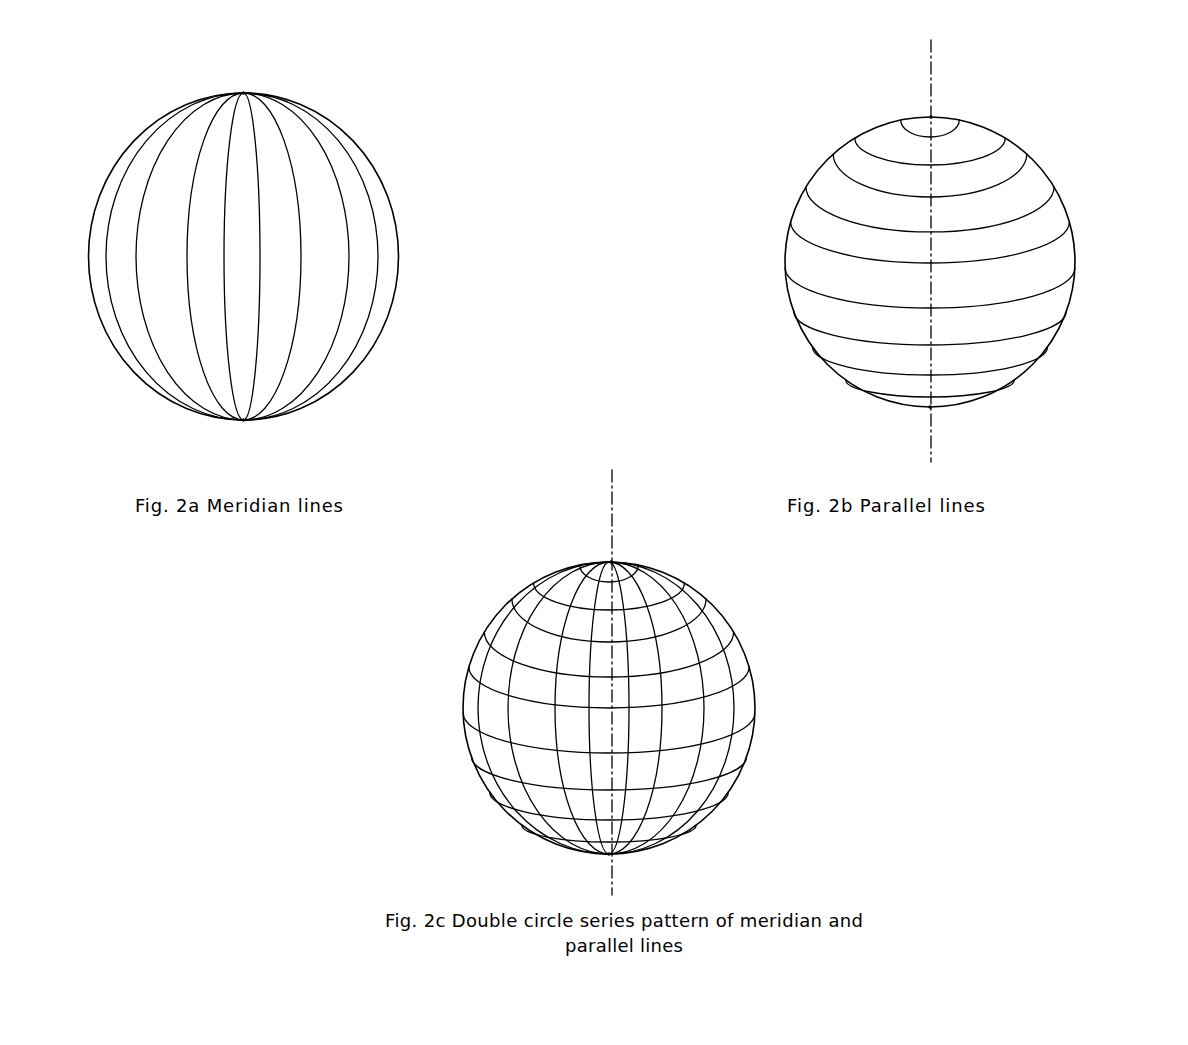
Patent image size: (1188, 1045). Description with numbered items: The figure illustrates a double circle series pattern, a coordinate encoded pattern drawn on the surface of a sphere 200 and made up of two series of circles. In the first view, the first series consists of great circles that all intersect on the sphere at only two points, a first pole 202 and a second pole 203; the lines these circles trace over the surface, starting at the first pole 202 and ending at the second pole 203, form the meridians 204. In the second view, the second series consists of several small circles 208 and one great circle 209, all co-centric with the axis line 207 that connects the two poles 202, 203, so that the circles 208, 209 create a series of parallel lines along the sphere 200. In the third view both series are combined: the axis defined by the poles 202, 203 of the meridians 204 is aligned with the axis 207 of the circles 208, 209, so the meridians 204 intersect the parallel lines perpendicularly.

In FIG. 2A, the sphere 200 is at (418, 291).
In FIG. 2B, the sphere 200 is at (762, 169).
In FIG. 2C, the sphere 200 is at (420, 757).
In FIG. 2A, the first pole 202 is at (244, 93).
In FIG. 2B, the first pole 202 is at (931, 116).
In FIG. 2C, the first pole 202 is at (611, 560).
In FIG. 2A, the second pole 203 is at (244, 420).
In FIG. 2B, the second pole 203 is at (928, 408).
In FIG. 2C, the second pole 203 is at (609, 856).
In FIG. 2A, the meridians 204 is at (283, 138).
In FIG. 2C, the meridians 204 is at (688, 643).
In FIG. 2B, the axis line 207 is at (952, 80).
In FIG. 2C, the axis line 207 is at (632, 518).
In FIG. 2B, the small circles 208 is at (1045, 203).
In FIG. 2C, the small circles 208 is at (752, 766).
In FIG. 2B, the great circle 209 is at (1067, 265).
In FIG. 2C, the great circle 209 is at (752, 710).